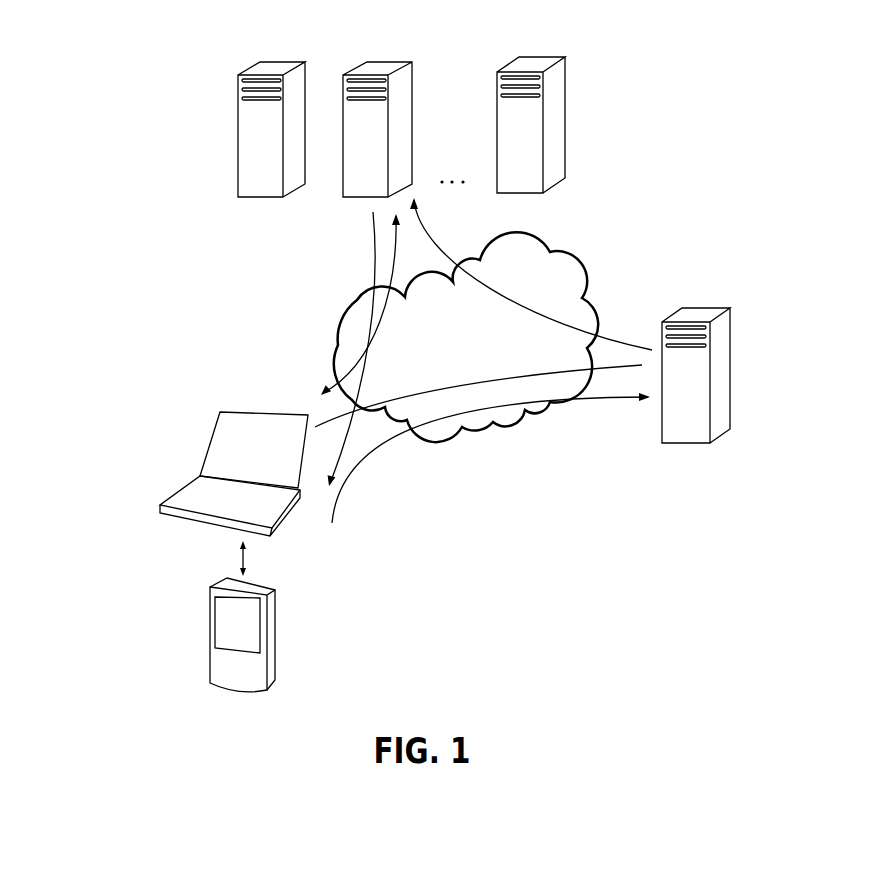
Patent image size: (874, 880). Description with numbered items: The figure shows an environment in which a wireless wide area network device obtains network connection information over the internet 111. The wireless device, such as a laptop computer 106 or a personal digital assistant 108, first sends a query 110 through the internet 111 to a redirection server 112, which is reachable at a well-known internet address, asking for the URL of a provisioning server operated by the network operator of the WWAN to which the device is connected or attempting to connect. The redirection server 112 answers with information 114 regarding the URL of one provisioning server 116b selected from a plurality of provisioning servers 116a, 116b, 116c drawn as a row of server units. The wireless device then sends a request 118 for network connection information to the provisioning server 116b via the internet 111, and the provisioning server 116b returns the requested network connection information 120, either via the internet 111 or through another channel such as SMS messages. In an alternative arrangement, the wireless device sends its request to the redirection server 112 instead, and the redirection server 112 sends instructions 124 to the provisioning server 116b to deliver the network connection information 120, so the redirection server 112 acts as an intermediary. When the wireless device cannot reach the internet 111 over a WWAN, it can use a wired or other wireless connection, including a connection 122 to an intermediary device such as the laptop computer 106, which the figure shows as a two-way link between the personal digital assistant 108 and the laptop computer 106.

The laptop computer 106 is at (187, 457).
The personal digital assistant 108 is at (200, 643).
The query 110 is at (361, 475).
The internet 111 is at (578, 265).
The redirection server 112 is at (727, 380).
The information 114 is at (615, 360).
The provisioning server 116a is at (240, 115).
The provisioning server 116b is at (412, 80).
The provisioning server 116c is at (568, 105).
The request 118 is at (392, 282).
The network connection information 120 is at (370, 270).
The connection 122 is at (237, 557).
The instructions 124 is at (430, 240).